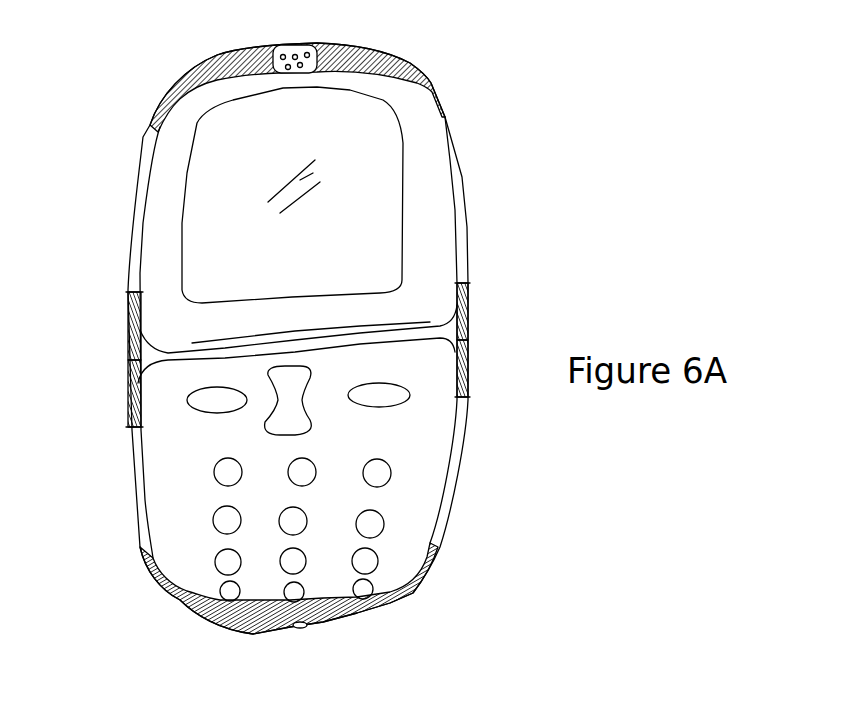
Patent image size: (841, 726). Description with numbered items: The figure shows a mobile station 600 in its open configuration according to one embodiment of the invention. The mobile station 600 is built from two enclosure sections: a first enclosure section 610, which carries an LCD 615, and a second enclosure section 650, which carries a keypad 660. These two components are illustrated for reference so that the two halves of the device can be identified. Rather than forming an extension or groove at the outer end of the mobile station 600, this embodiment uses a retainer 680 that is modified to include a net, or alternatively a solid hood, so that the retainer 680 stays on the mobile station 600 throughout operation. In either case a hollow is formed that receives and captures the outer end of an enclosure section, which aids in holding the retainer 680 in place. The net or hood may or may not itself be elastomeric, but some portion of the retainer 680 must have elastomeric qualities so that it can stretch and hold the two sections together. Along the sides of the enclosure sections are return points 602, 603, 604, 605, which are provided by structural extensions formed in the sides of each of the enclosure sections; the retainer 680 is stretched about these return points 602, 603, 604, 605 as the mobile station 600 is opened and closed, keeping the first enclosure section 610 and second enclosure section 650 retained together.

The mobile station 600 is at (603, 262).
The return point 602 is at (130, 288).
The return point 603 is at (468, 280).
The return point 604 is at (128, 437).
The return point 605 is at (468, 397).
The first enclosure section 610 is at (413, 97).
The LCD 615 is at (361, 219).
The second enclosure section 650 is at (427, 492).
The keypad 660 is at (252, 535).
The retainer 680 is at (437, 563).